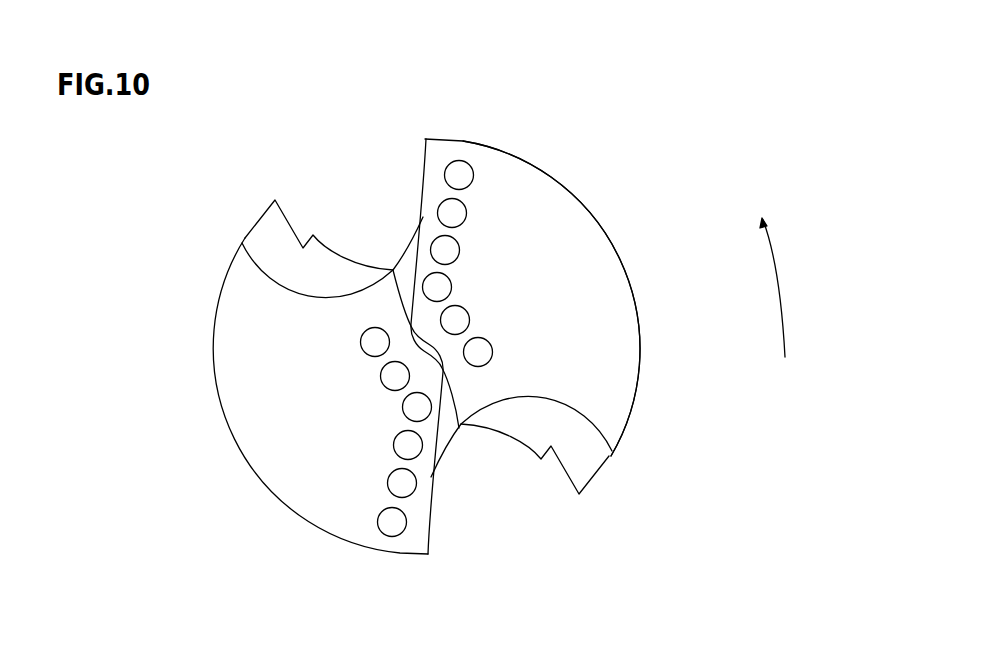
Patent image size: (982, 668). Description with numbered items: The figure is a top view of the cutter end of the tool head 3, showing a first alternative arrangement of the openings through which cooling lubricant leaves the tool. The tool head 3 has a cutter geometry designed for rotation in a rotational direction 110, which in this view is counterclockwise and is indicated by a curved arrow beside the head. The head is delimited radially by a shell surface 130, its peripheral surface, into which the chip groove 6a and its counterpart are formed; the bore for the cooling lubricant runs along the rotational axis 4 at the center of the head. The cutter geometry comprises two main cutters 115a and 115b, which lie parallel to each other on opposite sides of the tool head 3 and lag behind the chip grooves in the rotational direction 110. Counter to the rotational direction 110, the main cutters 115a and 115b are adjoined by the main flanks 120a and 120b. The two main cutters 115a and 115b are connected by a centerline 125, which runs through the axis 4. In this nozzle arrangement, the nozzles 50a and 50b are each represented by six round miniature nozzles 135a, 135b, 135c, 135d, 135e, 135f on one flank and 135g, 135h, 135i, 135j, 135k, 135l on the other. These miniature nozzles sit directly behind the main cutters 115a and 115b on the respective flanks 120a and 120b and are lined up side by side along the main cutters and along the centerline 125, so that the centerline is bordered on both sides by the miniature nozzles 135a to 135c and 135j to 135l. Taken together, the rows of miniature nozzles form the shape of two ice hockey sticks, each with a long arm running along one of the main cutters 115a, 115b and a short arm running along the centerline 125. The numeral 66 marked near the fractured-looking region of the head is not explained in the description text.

The tool head 3 is at (670, 108).
The rotational axis 4 is at (395, 270).
The chip groove 6a is at (590, 462).
The nozzle 50a is at (267, 441).
The nozzle 50b is at (582, 244).
The fracture surface 66 is at (258, 228).
The rotational direction 110 is at (787, 295).
The main cutter 115a is at (440, 358).
The main cutter 115b is at (404, 302).
The main flank 120a is at (365, 539).
The main flank 120b is at (500, 170).
The centerline 125 is at (461, 424).
The shell surface 130 is at (542, 158).
The miniature nozzle 135a is at (375, 342).
The miniature nozzle 135b is at (395, 376).
The miniature nozzle 135c is at (417, 407).
The miniature nozzle 135d is at (408, 445).
The miniature nozzle 135e is at (402, 483).
The miniature nozzle 135f is at (392, 522).
The miniature nozzle 135g is at (459, 175).
The miniature nozzle 135h is at (452, 213).
The miniature nozzle 135i is at (445, 250).
The miniature nozzle 135j is at (437, 287).
The miniature nozzle 135k is at (455, 320).
The miniature nozzle 135l is at (478, 352).